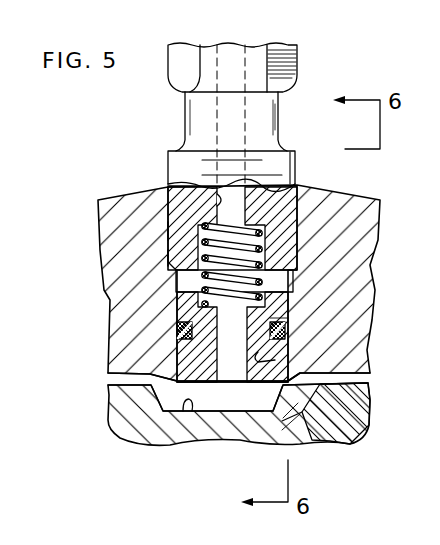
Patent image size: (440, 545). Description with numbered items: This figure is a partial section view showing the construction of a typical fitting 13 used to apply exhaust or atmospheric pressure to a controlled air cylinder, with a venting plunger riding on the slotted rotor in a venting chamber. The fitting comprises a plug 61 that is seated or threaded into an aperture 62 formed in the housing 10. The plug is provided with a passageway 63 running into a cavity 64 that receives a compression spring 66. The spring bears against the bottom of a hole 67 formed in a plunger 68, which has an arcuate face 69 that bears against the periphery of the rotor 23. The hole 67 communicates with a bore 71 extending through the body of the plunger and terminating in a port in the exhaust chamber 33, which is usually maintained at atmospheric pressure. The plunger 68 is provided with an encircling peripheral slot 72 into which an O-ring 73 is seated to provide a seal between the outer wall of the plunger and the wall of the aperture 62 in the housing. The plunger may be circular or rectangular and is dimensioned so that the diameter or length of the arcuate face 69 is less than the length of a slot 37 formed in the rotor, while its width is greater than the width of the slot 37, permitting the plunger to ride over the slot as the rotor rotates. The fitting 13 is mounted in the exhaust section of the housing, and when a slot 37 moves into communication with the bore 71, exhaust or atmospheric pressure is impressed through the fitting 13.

The fitting 13 is at (160, 133).
The housing 10 is at (117, 200).
The plug 61 is at (297, 171).
The aperture 62 is at (300, 200).
The passageway 63 is at (216, 197).
The cavity 64 is at (166, 231).
The compression spring 66 is at (166, 258).
The hole 67 is at (262, 284).
The peripheral slot 72 is at (178, 322).
The O-ring 73 is at (177, 333).
The plunger 68 is at (290, 316).
The bore 71 is at (290, 357).
The exhaust chamber 33 is at (112, 380).
The rotor 23 is at (122, 424).
The arcuate face 69 is at (305, 408).
The slot 37 is at (187, 412).